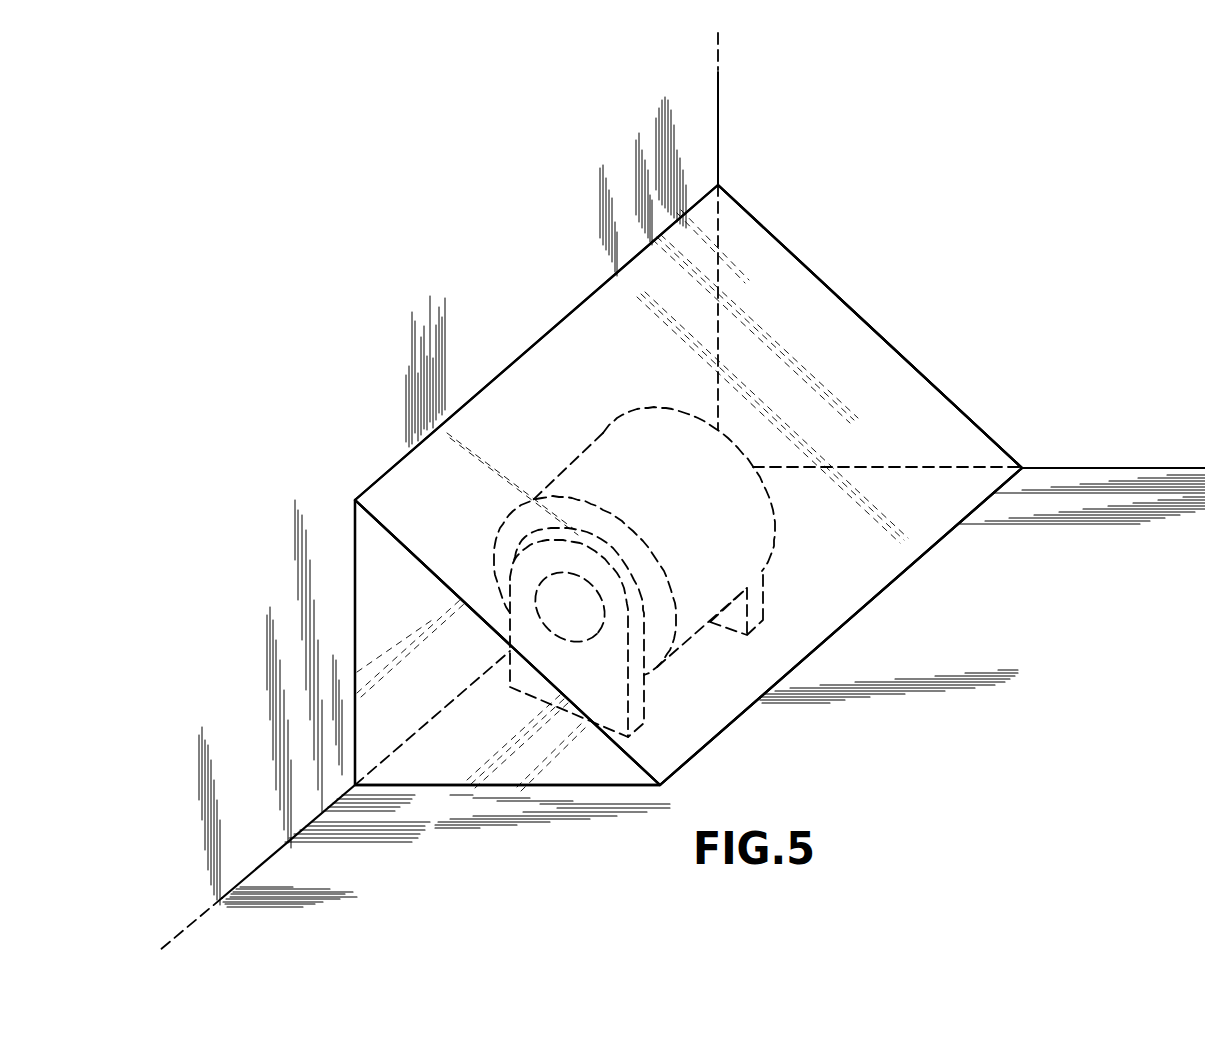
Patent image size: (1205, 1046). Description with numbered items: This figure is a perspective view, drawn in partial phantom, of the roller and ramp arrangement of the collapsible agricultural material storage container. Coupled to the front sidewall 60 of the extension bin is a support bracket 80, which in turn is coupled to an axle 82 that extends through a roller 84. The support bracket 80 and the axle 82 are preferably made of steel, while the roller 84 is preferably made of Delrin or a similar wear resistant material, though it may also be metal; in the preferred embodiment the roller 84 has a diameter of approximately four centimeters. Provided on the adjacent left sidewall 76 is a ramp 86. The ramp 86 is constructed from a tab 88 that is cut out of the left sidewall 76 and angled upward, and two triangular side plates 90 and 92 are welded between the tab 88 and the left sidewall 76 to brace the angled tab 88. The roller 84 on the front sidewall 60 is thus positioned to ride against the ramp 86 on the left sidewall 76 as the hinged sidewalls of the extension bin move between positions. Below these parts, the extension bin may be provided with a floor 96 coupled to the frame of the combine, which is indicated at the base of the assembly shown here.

The front sidewall 60 is at (248, 703).
The left sidewall 76 is at (451, 891).
The support bracket 80 is at (497, 563).
The axle 82 is at (510, 580).
The roller 84 is at (602, 440).
The ramp 86 is at (898, 347).
The tab 88 is at (780, 260).
The triangular side plate 90 is at (442, 757).
The triangular side plate 92 is at (838, 295).
The floor 96 is at (1036, 334).